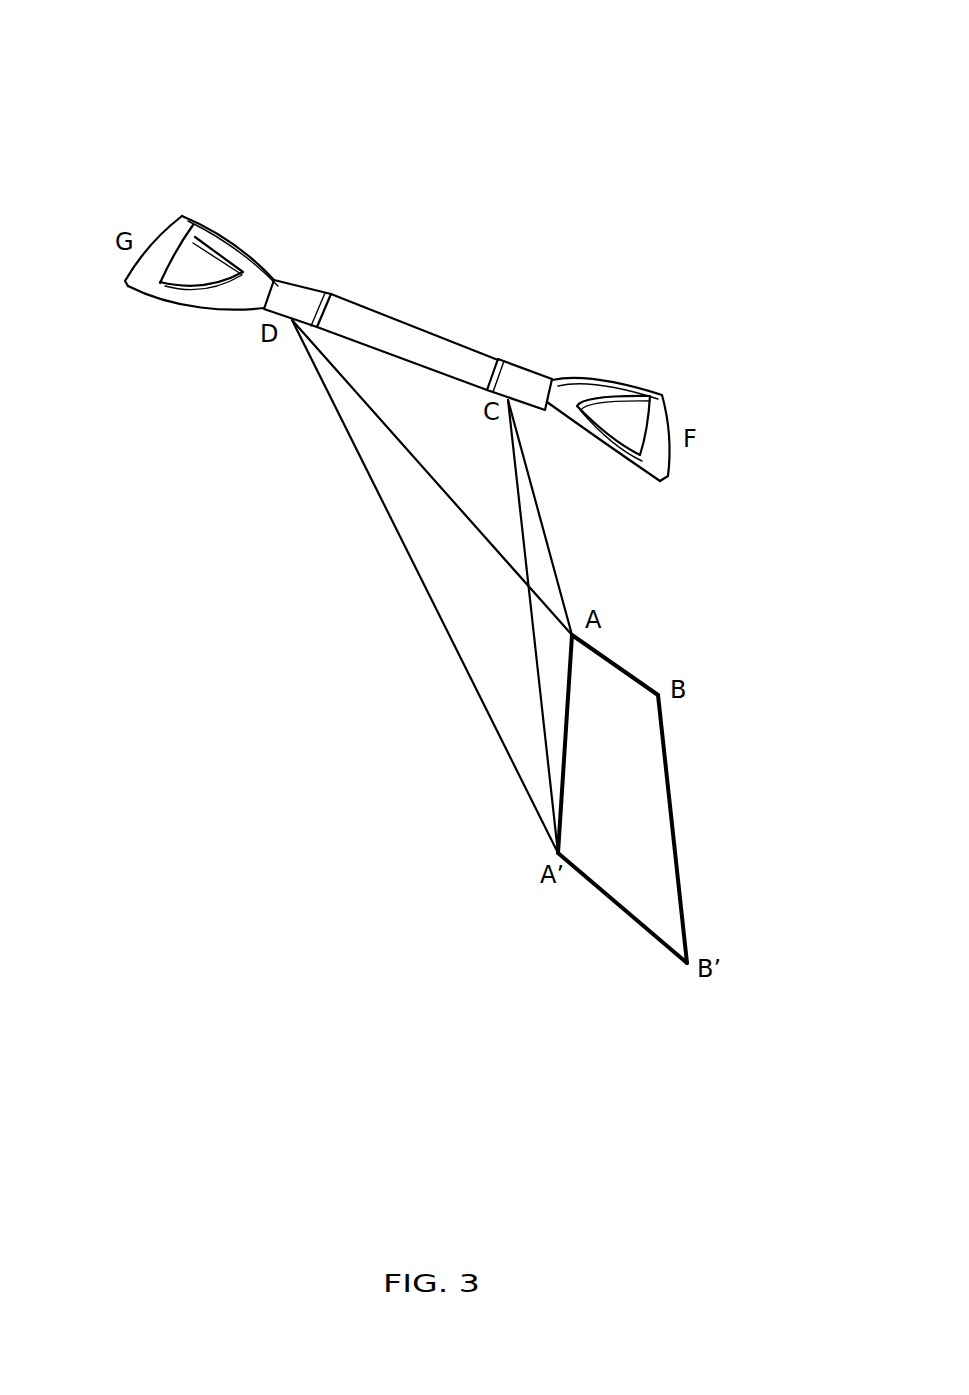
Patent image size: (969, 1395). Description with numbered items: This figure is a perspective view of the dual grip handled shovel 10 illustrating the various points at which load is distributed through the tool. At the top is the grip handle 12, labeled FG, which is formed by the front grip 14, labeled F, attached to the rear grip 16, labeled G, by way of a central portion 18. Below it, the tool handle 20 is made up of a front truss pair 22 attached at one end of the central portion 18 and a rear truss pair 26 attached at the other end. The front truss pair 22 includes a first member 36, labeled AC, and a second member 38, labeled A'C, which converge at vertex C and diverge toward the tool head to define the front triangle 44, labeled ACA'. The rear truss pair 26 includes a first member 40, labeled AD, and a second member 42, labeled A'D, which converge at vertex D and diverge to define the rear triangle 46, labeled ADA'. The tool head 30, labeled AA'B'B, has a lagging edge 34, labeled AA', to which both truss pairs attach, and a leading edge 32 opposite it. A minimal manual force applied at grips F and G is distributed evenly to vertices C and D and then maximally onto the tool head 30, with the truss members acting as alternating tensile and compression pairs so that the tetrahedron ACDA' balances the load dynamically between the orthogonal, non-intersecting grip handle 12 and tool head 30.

The dual grip handled shovel 10 is at (437, 110).
The grip handle 12 is at (366, 298).
The front grip 14 is at (623, 383).
The rear grip 16 is at (210, 233).
The central portion 18 is at (432, 333).
The tool handle 20 is at (374, 492).
The front truss pair 22 is at (523, 521).
The rear truss pair 26 is at (377, 417).
The tool head 30 is at (680, 715).
The leading edge 32 is at (680, 867).
The lagging edge 34 is at (565, 757).
The first member 36 is at (530, 459).
The second member 38 is at (520, 458).
The first member 40 is at (345, 375).
The second member 42 is at (327, 393).
The front triangle 44 is at (550, 593).
The rear triangle 46 is at (438, 572).